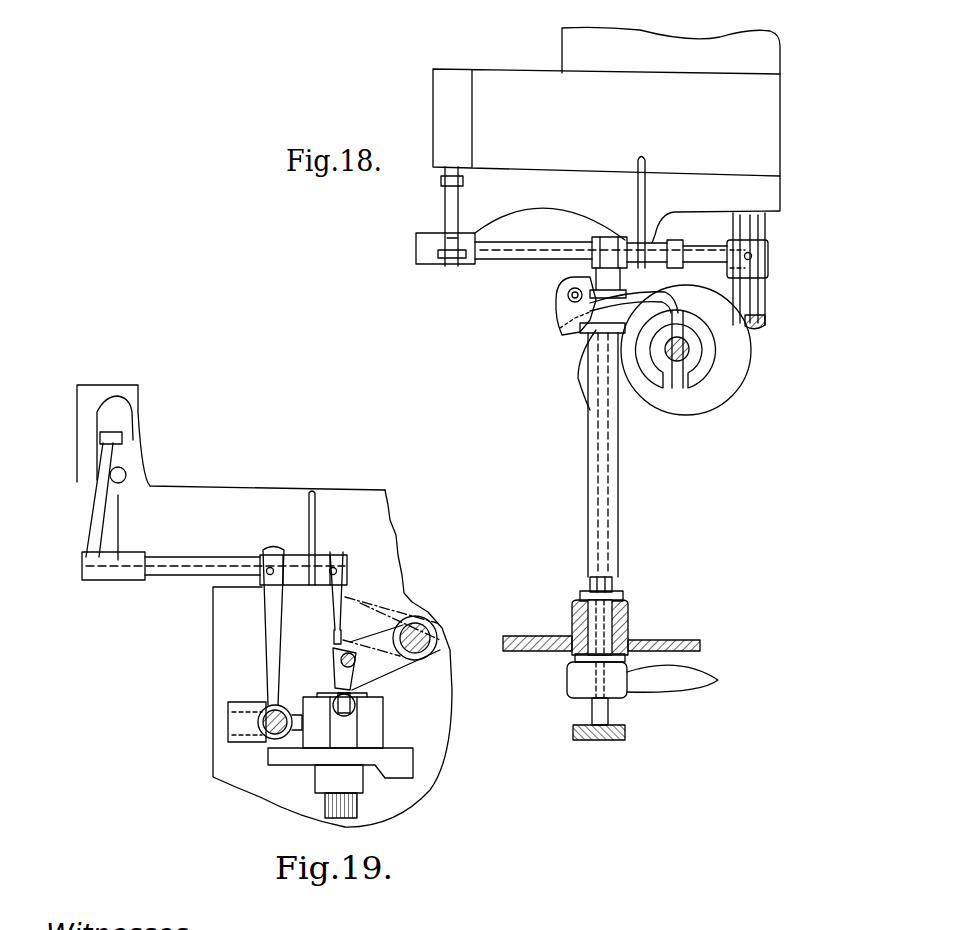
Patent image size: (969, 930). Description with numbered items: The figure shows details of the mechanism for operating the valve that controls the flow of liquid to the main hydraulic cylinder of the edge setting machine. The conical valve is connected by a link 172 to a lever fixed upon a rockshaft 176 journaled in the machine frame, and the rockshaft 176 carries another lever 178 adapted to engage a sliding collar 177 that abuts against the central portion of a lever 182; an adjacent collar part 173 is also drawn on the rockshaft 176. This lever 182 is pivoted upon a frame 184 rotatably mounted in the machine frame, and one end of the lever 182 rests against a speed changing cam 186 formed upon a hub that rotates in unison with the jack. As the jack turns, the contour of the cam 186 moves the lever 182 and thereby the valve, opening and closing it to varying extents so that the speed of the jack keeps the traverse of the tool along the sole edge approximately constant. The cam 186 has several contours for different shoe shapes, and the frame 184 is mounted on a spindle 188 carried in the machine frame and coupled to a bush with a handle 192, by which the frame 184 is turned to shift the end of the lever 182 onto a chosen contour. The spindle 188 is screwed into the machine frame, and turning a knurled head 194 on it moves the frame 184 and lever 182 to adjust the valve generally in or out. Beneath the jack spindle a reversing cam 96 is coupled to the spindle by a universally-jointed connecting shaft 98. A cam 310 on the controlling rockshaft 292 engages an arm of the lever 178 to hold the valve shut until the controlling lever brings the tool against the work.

In FIG. 18, the reversing cam 96 is at (686, 357).
In FIG. 19, the reversing cam 96 is at (290, 758).
In FIG. 19, the universally-jointed connecting shaft 98 is at (332, 670).
In FIG. 19, the link 172 is at (100, 526).
In FIG. 18, the collar 173 is at (598, 240).
In FIG. 19, the collar 173 is at (272, 618).
In FIG. 18, the rockshaft 176 is at (527, 275).
In FIG. 19, the rockshaft 176 is at (180, 585).
In FIG. 18, the sliding collar 177 is at (560, 263).
In FIG. 19, the lever 178 is at (332, 597).
In FIG. 18, the lever 182 is at (600, 312).
In FIG. 18, the frame 184 is at (586, 484).
In FIG. 19, the frame 184 is at (268, 705).
In FIG. 18, the speed changing cam 186 is at (722, 357).
In FIG. 18, the spindle 188 is at (614, 492).
In FIG. 19, the spindle 188 is at (266, 735).
In FIG. 18, the handle 192 is at (680, 686).
In FIG. 18, the knurled head 194 is at (622, 740).
In FIG. 18, the rockshaft 292 is at (745, 310).
In FIG. 19, the rockshaft 292 is at (420, 628).
In FIG. 18, the cam 310 is at (745, 252).
In FIG. 19, the cam 310 is at (382, 668).